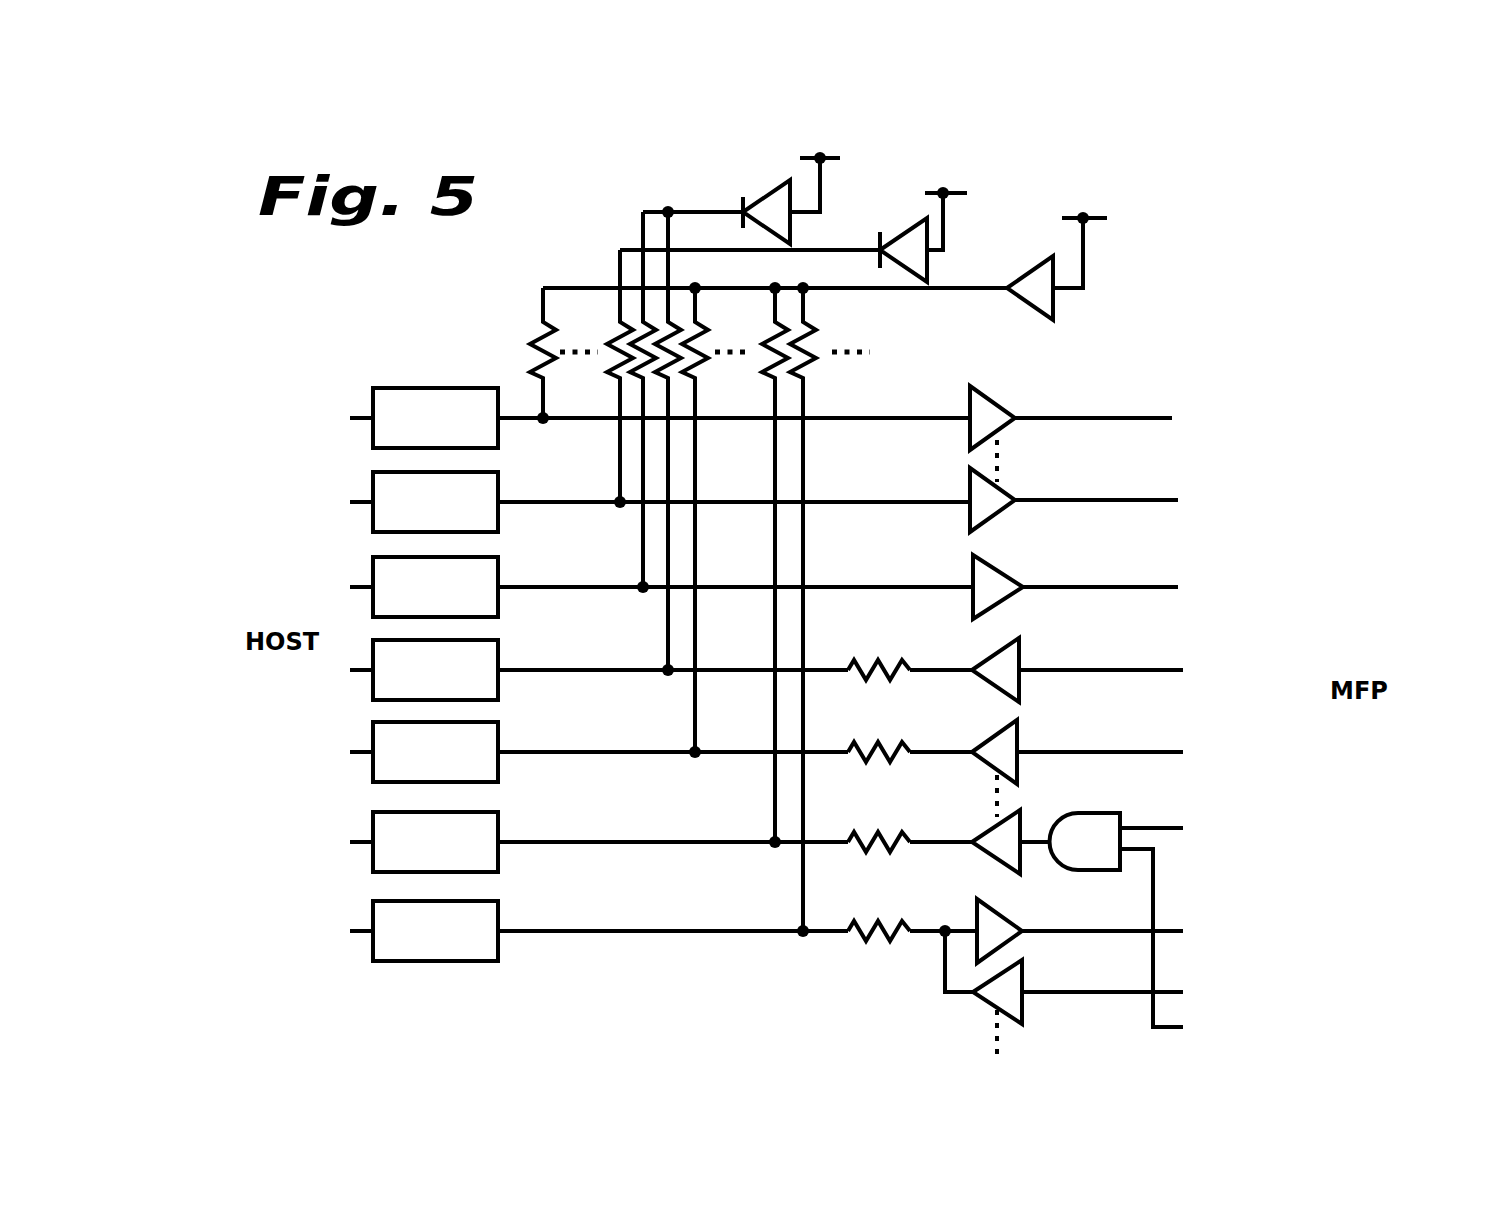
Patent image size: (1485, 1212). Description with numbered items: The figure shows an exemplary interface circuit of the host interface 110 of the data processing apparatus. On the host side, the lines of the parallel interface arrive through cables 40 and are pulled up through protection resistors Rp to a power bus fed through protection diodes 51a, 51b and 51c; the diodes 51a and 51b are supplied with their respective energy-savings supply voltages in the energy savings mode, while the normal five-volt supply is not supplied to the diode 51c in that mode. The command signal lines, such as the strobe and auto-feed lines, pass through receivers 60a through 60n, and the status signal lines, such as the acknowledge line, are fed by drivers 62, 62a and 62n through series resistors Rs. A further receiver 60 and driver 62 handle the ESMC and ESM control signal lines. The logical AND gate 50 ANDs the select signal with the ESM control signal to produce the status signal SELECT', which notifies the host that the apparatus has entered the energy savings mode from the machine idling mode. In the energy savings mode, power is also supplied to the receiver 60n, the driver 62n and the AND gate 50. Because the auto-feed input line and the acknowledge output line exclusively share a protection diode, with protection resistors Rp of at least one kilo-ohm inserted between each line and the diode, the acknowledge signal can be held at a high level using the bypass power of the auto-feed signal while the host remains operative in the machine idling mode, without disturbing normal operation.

The cable 40 is at (405, 387).
The logical AND gate 50 is at (1126, 813).
The diode 51a is at (748, 197).
The diode 51b is at (904, 236).
The diode 51c is at (1027, 276).
The buffer 60 is at (1008, 575).
The buffer 60a is at (997, 397).
The receiver 60n is at (1008, 488).
The inverting buffer 62 is at (1021, 657).
The inverting buffer 62a is at (1020, 739).
The driver 62n is at (1023, 820).
The host interface 110 is at (1206, 369).